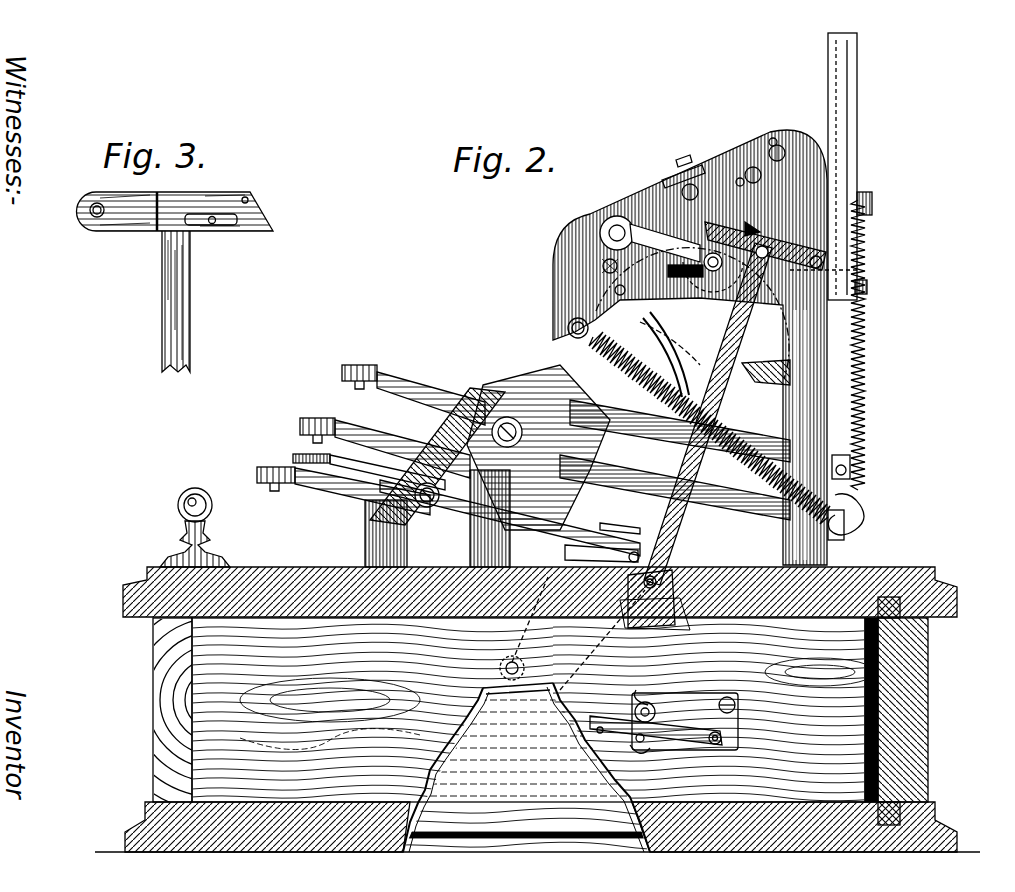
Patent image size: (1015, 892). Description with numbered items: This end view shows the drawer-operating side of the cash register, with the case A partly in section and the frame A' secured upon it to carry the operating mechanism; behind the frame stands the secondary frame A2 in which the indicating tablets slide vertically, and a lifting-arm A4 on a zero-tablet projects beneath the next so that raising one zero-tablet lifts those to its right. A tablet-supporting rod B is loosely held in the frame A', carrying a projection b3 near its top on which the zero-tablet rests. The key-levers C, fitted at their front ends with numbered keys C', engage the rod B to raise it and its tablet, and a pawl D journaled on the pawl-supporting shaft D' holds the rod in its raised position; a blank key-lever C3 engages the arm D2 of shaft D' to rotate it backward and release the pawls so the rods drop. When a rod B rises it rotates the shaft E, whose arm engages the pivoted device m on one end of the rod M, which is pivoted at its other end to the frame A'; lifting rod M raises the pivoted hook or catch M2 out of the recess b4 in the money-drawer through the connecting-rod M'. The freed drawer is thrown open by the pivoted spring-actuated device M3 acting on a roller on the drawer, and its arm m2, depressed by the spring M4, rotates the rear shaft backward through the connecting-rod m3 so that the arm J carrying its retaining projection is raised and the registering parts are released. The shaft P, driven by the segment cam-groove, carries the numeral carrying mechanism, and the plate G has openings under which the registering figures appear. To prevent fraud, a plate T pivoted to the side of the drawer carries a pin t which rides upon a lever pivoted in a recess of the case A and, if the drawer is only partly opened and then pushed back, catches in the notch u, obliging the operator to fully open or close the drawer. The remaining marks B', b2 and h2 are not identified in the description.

In FIG. 2, the case A is at (555, 709).
In FIG. 2, the secondary frame or case A2 is at (852, 127).
In FIG. 2, the lifting-arm A4 is at (872, 200).
In FIG. 2, the frame A' is at (771, 188).
In FIG. 2, the tablet-supporting rod B is at (870, 345).
In FIG. 2, the pin B' is at (601, 294).
In FIG. 2, the connecting rod pivot b2 is at (572, 633).
In FIG. 2, the projection b3 is at (867, 278).
In FIG. 2, the recess b4 is at (670, 632).
In FIG. 2, the key-lever C is at (542, 445).
In FIG. 2, the key C' is at (326, 410).
In FIG. 2, the blank key-lever C3 is at (506, 506).
In FIG. 2, the pawl D is at (856, 467).
In FIG. 2, the pawl-supporting shaft D' is at (863, 517).
In FIG. 2, the arm D2 is at (602, 542).
In FIG. 2, the shaft E is at (605, 230).
In FIG. 2, the plate G is at (685, 163).
In FIG. 2, the arm J is at (733, 169).
In FIG. 3, the pivoted device m is at (211, 208).
In FIG. 2, the pivoted device m is at (626, 391).
In FIG. 3, the rod M is at (175, 211).
In FIG. 2, the rod M is at (765, 246).
In FIG. 3, the connecting-rod M' is at (189, 301).
In FIG. 2, the connecting-rod M' is at (708, 414).
In FIG. 2, the arm m2 is at (699, 421).
In FIG. 2, the pivoted hook or catch M2 is at (653, 599).
In FIG. 2, the connecting-rod m3 is at (660, 330).
In FIG. 2, the pivoted spring-actuated device M3 is at (512, 447).
In FIG. 2, the spring M4 is at (680, 431).
In FIG. 2, the bar h2 is at (766, 378).
In FIG. 2, the shaft P is at (596, 265).
In FIG. 2, the plate T is at (690, 720).
In FIG. 2, the pin or projection t is at (674, 733).
In FIG. 2, the notch u is at (640, 734).